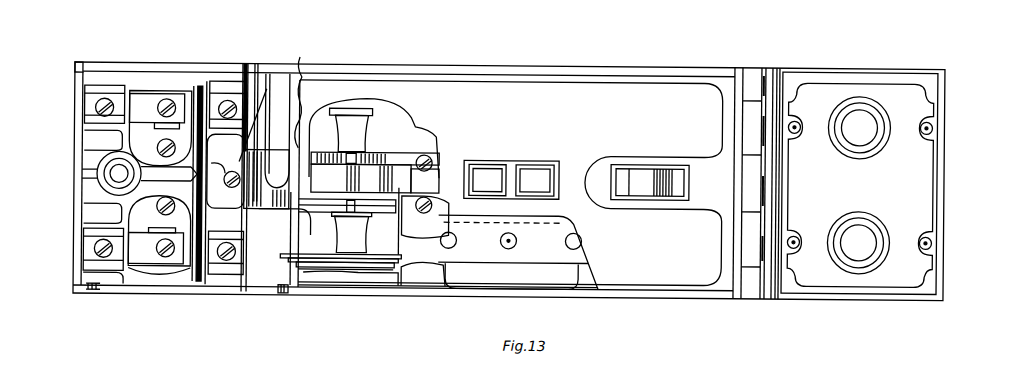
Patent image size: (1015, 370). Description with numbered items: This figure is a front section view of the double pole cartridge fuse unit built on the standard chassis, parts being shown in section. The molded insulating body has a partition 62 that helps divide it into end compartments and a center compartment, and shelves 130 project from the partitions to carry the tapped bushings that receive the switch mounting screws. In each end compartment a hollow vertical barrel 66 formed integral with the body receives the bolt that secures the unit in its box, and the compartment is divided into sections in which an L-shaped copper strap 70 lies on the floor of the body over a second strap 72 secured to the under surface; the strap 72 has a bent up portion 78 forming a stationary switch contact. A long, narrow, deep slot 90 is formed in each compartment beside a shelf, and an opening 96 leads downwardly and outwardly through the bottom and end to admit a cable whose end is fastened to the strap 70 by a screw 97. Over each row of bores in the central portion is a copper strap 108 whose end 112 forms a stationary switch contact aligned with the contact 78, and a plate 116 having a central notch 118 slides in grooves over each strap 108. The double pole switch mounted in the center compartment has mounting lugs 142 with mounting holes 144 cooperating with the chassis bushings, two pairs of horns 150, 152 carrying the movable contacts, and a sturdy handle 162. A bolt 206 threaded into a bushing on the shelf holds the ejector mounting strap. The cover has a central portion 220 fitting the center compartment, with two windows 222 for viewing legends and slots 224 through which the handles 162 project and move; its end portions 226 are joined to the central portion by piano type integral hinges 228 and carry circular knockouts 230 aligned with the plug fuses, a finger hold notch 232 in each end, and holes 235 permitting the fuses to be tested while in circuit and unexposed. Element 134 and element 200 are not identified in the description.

The partition 62 is at (259, 284).
The hollow vertical barrel 66 is at (139, 173).
The L-shaped strap 70 is at (160, 182).
The second strap 72 is at (272, 258).
The bent up portion 78 is at (289, 262).
The slot 90 is at (203, 284).
The opening 96 is at (104, 184).
The screw 97 is at (166, 208).
The copper strap 108 is at (448, 252).
The strap contact end 112 is at (423, 274).
The plate 116 is at (458, 238).
The central notch 118 is at (520, 237).
The shelf 130 is at (304, 215).
The base member 134 is at (350, 276).
The mounting lug 142 is at (297, 218).
The mounting hole 144 is at (432, 160).
The horns 150 is at (362, 227).
The horns 152 is at (362, 122).
The handle 162 is at (375, 172).
The insulating strip 200 is at (200, 84).
The bolt 206 is at (233, 190).
The central portion 220 is at (510, 183).
The windows 222 is at (487, 175).
The slots 224 is at (672, 160).
The end portion 226 is at (299, 70).
The piano type integral hinge 228 is at (246, 72).
The circular depression or knockout 230 is at (859, 186).
The finger hold notch 232 is at (292, 120).
The hole 235 is at (934, 119).